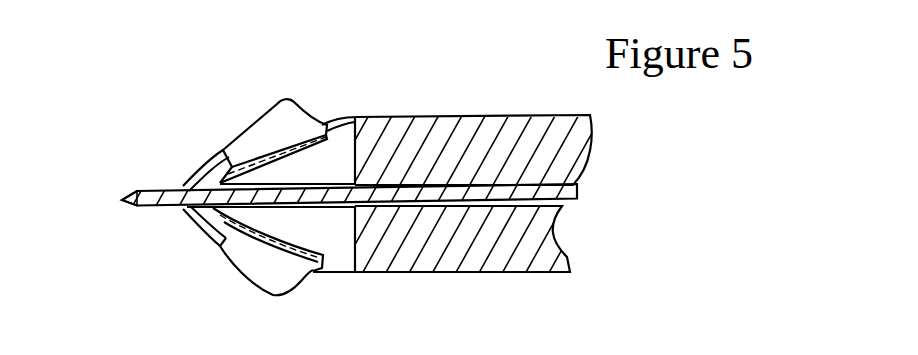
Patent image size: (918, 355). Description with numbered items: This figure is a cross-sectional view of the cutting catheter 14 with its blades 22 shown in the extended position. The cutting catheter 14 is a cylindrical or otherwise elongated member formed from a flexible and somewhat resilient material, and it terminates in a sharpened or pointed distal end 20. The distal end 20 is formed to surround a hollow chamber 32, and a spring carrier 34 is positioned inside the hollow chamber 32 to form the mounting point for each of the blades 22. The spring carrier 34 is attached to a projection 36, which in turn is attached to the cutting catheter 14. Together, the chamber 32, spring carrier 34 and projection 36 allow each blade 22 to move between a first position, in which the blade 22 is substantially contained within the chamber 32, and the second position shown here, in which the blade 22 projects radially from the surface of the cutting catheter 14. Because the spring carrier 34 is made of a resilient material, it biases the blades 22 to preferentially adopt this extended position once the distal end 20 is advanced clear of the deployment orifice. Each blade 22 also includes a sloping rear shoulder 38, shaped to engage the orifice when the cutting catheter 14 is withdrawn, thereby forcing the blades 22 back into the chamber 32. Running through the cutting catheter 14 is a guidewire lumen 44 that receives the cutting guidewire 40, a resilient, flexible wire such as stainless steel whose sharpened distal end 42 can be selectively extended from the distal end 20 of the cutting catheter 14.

The cutting catheter 14 is at (448, 138).
The distal end 20 is at (200, 175).
The blades 22 is at (257, 127).
The hollow chamber 32 is at (215, 235).
The spring carrier 34 is at (212, 226).
The projection 36 is at (317, 268).
The sloping rear shoulder 38 is at (310, 115).
The cutting guidewire 40 is at (463, 197).
The distal end 42 is at (118, 203).
The guidewire lumen 44 is at (542, 180).